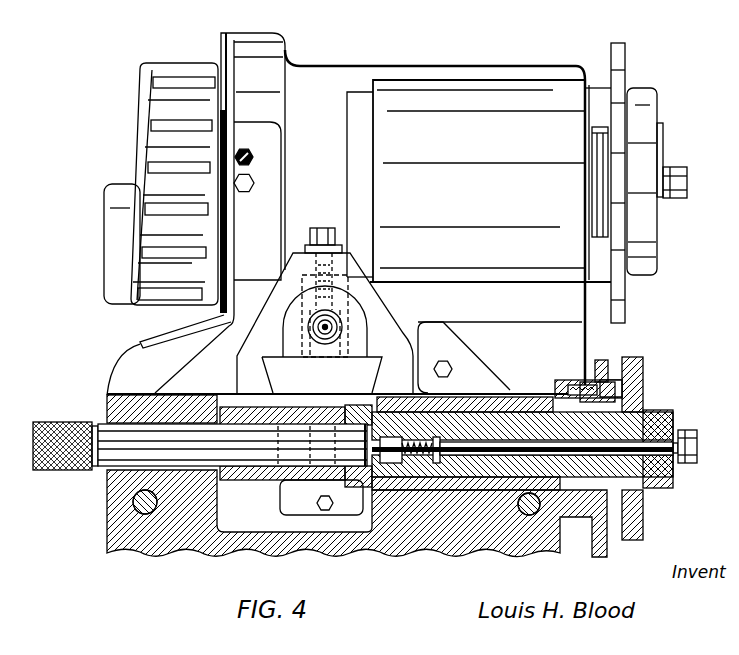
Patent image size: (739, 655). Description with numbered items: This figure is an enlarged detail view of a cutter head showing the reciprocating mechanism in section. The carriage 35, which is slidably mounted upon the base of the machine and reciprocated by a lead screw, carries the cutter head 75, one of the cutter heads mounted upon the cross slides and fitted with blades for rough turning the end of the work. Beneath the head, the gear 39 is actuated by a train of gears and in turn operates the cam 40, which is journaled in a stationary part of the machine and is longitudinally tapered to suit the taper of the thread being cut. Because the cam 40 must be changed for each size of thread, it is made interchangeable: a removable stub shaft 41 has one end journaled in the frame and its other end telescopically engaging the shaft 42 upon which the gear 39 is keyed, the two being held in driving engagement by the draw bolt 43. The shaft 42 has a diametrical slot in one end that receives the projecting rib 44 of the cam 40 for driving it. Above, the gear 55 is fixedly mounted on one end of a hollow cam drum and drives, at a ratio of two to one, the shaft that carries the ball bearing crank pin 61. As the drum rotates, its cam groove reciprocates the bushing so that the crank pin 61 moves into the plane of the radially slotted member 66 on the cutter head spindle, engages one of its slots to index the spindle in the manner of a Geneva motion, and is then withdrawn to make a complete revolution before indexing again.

The carriage 35 is at (136, 550).
The gear 39 is at (643, 368).
The cam 40 is at (263, 483).
The removable stub shaft 41 is at (104, 428).
The shaft 42 is at (650, 410).
The draw bolt 43 is at (690, 429).
The projecting rib 44 is at (321, 500).
The gear 55 is at (352, 119).
The ball bearing crank pin 61 is at (604, 242).
The radially slotted member 66 is at (622, 306).
The cutter head 75 is at (150, 84).